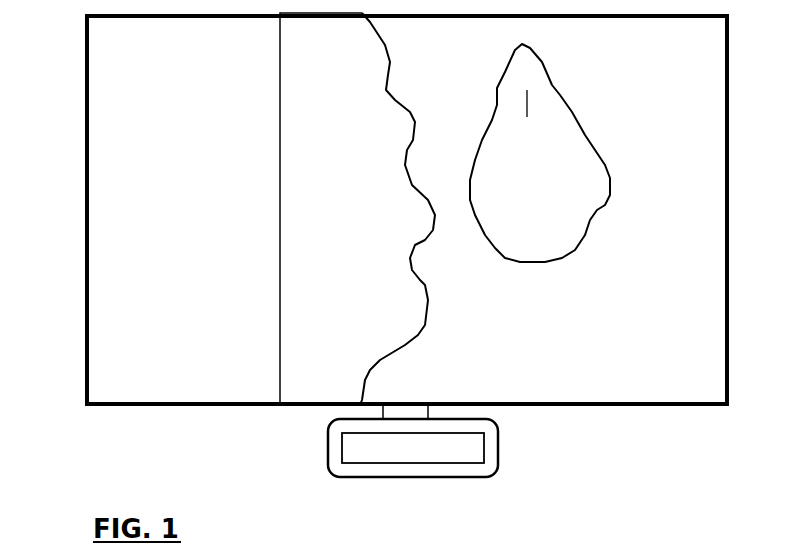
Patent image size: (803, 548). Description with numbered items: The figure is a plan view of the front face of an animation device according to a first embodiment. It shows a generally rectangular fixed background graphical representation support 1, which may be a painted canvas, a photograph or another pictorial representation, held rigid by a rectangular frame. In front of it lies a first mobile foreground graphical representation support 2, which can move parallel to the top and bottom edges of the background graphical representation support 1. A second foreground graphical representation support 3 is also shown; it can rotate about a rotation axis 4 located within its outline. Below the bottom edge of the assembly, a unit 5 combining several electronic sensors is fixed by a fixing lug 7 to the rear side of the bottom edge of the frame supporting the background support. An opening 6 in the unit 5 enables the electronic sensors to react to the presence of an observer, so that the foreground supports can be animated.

The fixed background graphical representation support 1 is at (160, 106).
The first mobile foreground graphical representation support 2 is at (340, 181).
The second foreground graphical representation support 3 is at (527, 187).
The rotation axis 4 is at (513, 104).
The unit 5 is at (500, 438).
The opening 6 is at (455, 448).
The fixing lug 7 is at (408, 412).